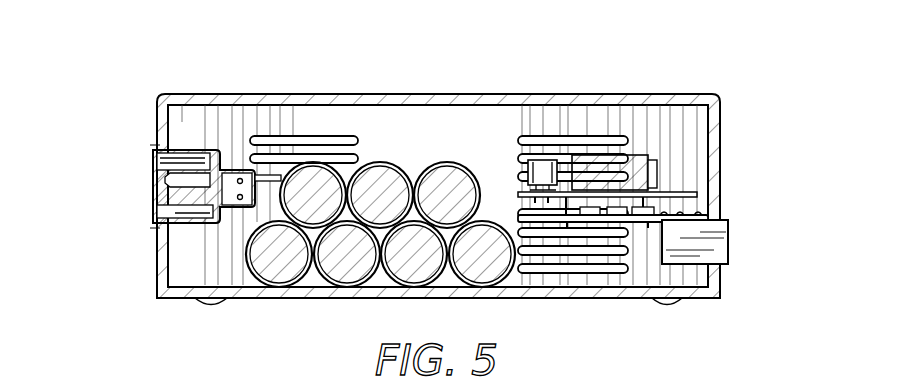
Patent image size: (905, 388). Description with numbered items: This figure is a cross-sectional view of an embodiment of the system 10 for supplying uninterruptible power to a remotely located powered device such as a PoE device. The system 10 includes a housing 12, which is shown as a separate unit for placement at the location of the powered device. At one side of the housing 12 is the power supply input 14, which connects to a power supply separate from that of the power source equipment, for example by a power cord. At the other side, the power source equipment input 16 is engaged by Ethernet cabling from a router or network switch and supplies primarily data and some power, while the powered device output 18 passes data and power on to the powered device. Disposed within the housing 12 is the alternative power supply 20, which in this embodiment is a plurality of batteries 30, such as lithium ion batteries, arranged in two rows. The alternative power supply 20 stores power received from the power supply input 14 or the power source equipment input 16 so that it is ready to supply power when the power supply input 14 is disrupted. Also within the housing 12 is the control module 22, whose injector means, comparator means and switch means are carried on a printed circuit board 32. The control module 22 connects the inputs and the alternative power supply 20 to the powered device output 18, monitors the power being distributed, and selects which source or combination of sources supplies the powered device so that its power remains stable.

The system for supplying uninterruptible power 10 is at (143, 90).
The housing 12 is at (695, 297).
The power supply input 14 is at (155, 208).
The power source equipment input 16 is at (728, 222).
The powered device output 18 is at (728, 263).
The alternative power supply 20 is at (450, 168).
The control module 22 is at (695, 193).
The battery 30 is at (380, 166).
The printed circuit board 32 is at (663, 188).